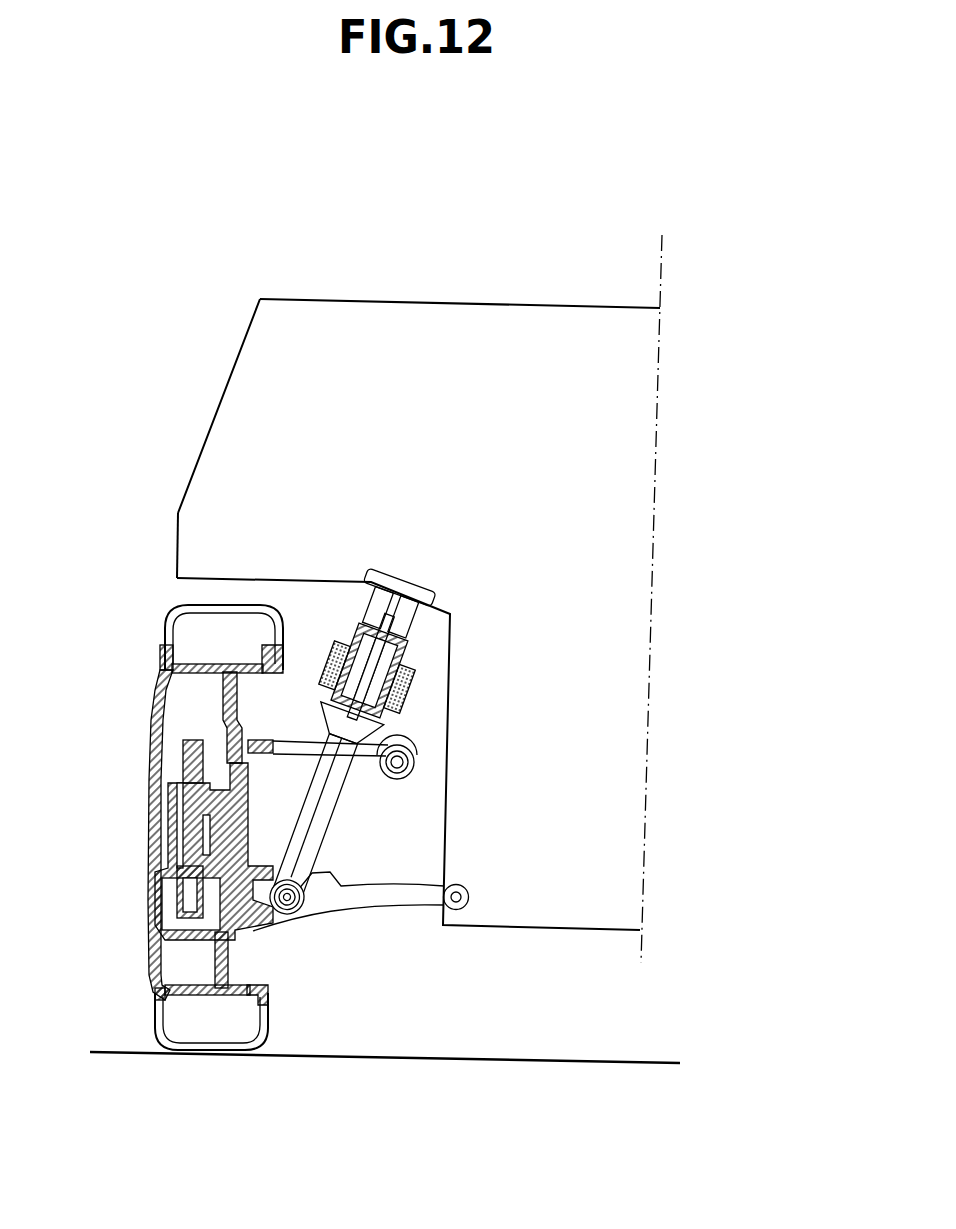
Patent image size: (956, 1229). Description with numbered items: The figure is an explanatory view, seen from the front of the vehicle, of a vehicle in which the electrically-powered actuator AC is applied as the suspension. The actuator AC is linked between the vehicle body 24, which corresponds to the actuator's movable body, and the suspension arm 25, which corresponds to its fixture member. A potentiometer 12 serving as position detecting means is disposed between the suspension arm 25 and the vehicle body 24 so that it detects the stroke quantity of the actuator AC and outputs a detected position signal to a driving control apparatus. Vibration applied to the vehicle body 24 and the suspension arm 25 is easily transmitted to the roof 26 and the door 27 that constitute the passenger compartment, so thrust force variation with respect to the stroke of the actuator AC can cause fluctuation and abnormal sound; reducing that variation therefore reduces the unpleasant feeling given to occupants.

The potentiometer 12 is at (373, 663).
The vehicle body 24 is at (278, 369).
The suspension arm 25 is at (375, 907).
The roof 26 is at (457, 302).
The door 27 is at (174, 549).
The actuator AC is at (366, 626).